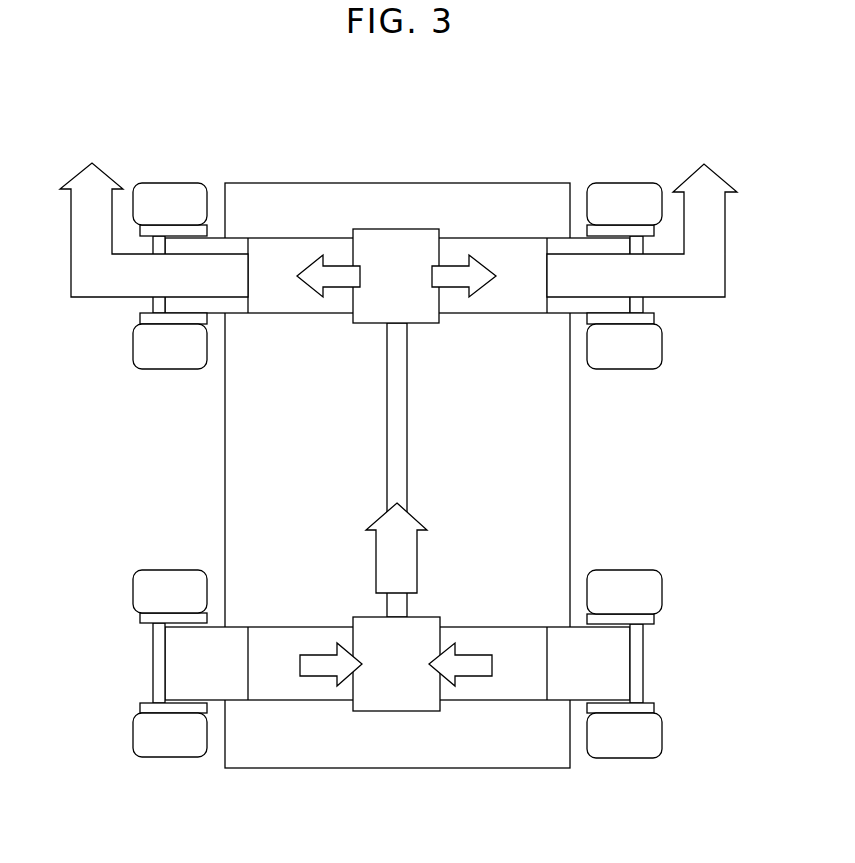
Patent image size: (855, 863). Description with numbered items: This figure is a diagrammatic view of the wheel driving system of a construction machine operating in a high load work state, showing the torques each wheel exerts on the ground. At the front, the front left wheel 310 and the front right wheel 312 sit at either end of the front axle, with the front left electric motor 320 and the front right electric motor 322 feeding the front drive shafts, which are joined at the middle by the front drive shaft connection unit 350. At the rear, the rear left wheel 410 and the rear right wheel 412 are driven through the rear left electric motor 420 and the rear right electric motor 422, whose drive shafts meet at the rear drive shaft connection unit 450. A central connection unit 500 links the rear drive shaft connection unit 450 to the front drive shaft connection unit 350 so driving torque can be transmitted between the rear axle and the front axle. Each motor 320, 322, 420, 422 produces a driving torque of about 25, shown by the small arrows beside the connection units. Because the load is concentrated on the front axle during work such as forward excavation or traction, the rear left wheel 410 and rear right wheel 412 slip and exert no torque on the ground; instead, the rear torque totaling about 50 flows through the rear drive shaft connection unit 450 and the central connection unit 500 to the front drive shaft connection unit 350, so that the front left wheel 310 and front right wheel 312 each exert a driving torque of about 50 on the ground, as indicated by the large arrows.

The driving torque of about 25 is at (395, 470).
The driving torque of about 50 is at (398, 378).
The front left wheel 310 is at (137, 347).
The front right wheel 312 is at (658, 346).
The front left electric motor 320 is at (297, 251).
The front right electric motor 322 is at (488, 250).
The front drive shaft connection unit 350 is at (395, 250).
The rear left wheel 410 is at (137, 734).
The rear right wheel 412 is at (659, 734).
The rear left electric motor 420 is at (297, 689).
The rear right electric motor 422 is at (490, 690).
The rear drive shaft connection unit 450 is at (398, 690).
The central connection unit 500 is at (400, 453).